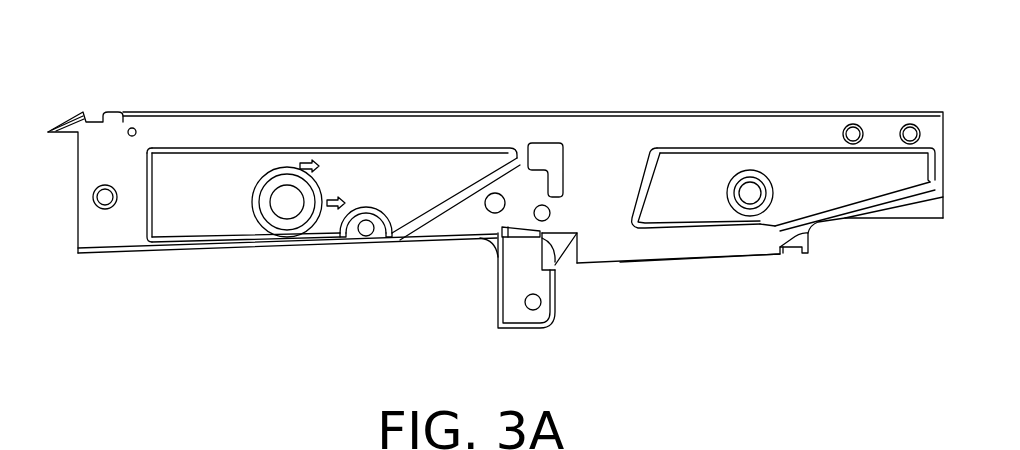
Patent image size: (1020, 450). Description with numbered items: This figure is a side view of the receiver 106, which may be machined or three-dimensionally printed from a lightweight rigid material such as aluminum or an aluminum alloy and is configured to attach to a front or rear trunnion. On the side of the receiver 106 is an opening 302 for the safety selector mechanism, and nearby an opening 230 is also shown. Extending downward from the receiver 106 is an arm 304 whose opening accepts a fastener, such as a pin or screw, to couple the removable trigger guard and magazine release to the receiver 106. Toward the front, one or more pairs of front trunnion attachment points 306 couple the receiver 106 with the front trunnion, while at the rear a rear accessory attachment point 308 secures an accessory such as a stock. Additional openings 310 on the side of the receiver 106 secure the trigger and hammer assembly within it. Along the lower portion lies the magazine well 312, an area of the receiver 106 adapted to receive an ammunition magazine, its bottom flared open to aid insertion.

The receiver 106 is at (495, 187).
The opening 302 is at (283, 186).
The slot 230 is at (561, 150).
The front trunnion attachment points 306 is at (750, 170).
The rear accessory attachment point 308 is at (103, 208).
The additional openings 310 is at (487, 208).
The arm 304 is at (513, 285).
The magazine well 312 is at (673, 290).